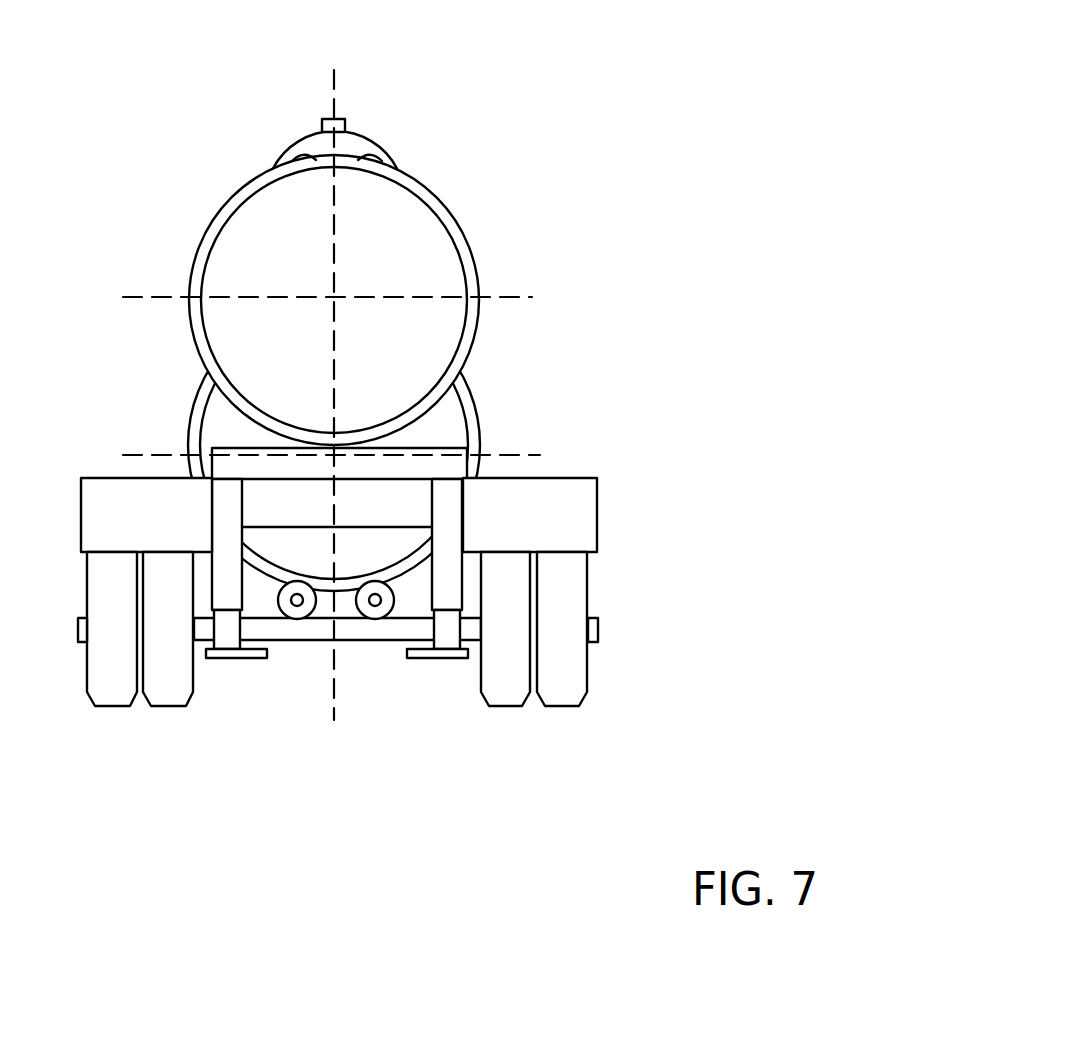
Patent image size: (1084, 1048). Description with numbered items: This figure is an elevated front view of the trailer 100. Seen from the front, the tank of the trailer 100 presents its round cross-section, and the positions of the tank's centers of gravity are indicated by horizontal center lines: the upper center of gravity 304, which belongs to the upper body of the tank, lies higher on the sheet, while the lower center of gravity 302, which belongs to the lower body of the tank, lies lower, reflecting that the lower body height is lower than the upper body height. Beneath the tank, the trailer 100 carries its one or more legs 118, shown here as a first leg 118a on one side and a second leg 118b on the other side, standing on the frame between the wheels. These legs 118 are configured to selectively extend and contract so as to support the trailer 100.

The trailer 100 is at (407, 417).
The upper center of gravity 304 is at (509, 297).
The lower center of gravity 302 is at (509, 455).
The one or more legs 118 is at (348, 650).
The first leg 118a is at (233, 658).
The second leg 118b is at (440, 658).